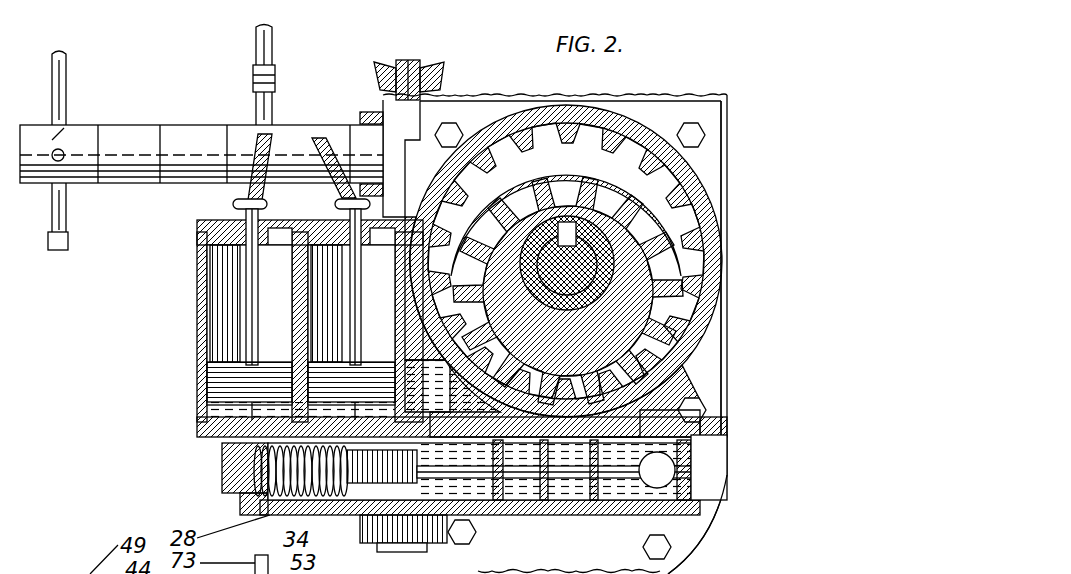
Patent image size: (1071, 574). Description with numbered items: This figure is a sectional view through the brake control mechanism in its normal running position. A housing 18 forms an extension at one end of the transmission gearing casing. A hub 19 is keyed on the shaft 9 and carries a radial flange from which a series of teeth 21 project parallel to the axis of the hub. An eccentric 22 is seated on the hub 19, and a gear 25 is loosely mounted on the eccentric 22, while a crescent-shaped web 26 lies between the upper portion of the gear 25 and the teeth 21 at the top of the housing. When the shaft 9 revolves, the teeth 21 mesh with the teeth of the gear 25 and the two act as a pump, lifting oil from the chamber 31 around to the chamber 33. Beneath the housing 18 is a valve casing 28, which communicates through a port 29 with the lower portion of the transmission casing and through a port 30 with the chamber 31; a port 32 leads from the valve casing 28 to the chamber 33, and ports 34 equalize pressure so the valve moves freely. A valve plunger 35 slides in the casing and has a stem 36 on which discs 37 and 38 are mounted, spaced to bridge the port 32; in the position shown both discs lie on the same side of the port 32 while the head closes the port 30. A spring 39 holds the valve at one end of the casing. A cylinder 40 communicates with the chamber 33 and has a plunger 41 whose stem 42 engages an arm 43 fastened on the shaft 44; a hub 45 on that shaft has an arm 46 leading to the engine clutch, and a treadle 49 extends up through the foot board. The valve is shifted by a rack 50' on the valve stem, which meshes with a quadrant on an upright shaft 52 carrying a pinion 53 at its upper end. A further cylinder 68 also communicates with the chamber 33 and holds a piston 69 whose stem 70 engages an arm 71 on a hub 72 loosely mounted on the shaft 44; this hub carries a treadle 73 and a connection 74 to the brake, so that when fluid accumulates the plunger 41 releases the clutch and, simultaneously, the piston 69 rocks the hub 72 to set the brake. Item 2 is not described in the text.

The pump housing 2 is at (632, 408).
The shaft 9 is at (560, 257).
The housing 18 is at (700, 375).
The hub 19 is at (597, 232).
The teeth 21 is at (672, 157).
The eccentric 22 is at (718, 253).
The gear 25 is at (603, 205).
The crescent-shaped web 26 is at (633, 180).
The valve casing 28 is at (670, 530).
The port 29 is at (675, 522).
The port 30 is at (635, 440).
The chamber 31 is at (615, 427).
The port 32 is at (532, 447).
The chamber 33 is at (592, 462).
The ports 34 is at (680, 505).
The valve plunger 35 is at (677, 513).
The stem 36 is at (515, 445).
The disc 37 is at (553, 463).
The disc 38 is at (520, 500).
The spring 39 is at (300, 463).
The cylinder 40 is at (350, 345).
The plunger 41 is at (222, 350).
The stem 42 is at (340, 357).
The arm 43 is at (322, 142).
The shaft 44 is at (62, 137).
The hub 45 is at (68, 133).
The arm 46 is at (63, 220).
The treadle 49 is at (22, 148).
The rack 50' is at (412, 407).
The upright shaft 52 is at (402, 75).
The pinion 53 is at (428, 72).
The cylinder 68 is at (230, 380).
The piston 69 is at (300, 397).
The stem 70 is at (323, 308).
The arm 71 is at (240, 188).
The hub 72 is at (277, 133).
The treadle 73 is at (265, 52).
The connection 74 is at (258, 78).